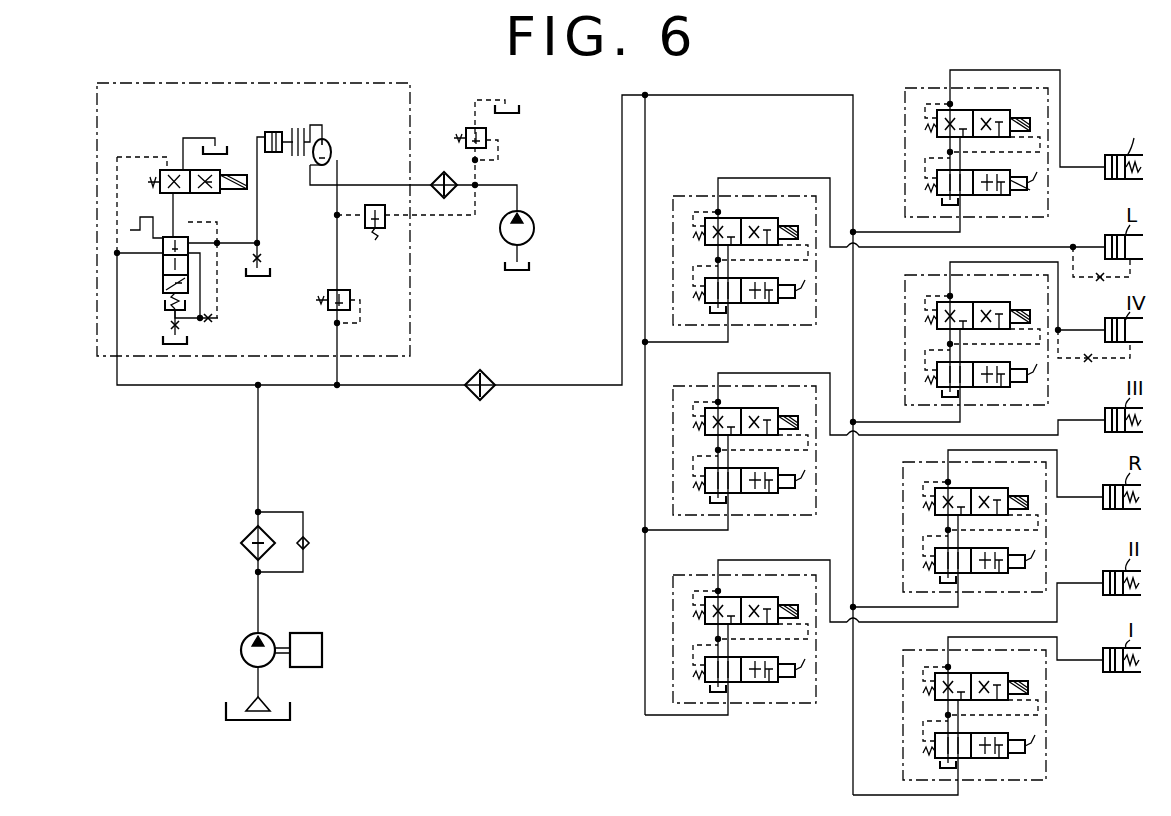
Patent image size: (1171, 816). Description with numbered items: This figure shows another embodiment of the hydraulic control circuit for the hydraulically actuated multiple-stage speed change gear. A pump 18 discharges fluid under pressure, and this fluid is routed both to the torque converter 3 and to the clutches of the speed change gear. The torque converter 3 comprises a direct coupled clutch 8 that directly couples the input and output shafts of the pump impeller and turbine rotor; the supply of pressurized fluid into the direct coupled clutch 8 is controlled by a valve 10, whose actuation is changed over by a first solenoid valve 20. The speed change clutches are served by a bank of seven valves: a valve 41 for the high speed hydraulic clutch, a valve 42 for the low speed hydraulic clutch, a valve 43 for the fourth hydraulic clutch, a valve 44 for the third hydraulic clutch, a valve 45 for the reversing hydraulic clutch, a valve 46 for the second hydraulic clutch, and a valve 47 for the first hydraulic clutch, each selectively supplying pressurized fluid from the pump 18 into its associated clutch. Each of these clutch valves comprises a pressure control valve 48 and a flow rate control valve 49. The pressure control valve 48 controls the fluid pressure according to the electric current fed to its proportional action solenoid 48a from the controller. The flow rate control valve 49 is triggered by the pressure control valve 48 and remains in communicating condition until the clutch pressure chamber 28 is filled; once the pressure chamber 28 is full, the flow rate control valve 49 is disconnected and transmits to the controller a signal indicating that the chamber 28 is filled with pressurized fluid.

The torque converter 3 is at (333, 146).
The direct coupled clutch 8 is at (292, 130).
The valve for use with the direct coupled clutch 10 is at (163, 285).
The pump 18 is at (241, 648).
The first solenoid valve 20 is at (218, 193).
The clutch pressure chamber 28 is at (1105, 160).
The valve for use with the high speed hydraulic clutch 41 is at (978, 157).
The valve for use with the low speed hydraulic clutch 42 is at (673, 210).
The valve for use with the fourth hydraulic clutch 43 is at (905, 310).
The valve for use with the third hydraulic clutch 44 is at (673, 400).
The valve for use with the reversing hydraulic clutch 45 is at (903, 490).
The valve for use with the second hydraulic clutch 46 is at (673, 588).
The valve for use with the first hydraulic clutch 47 is at (903, 678).
The pressure control valve 48 is at (1008, 197).
The proportional action solenoid 48a is at (1030, 185).
The flow rate control valve 49 is at (1012, 112).